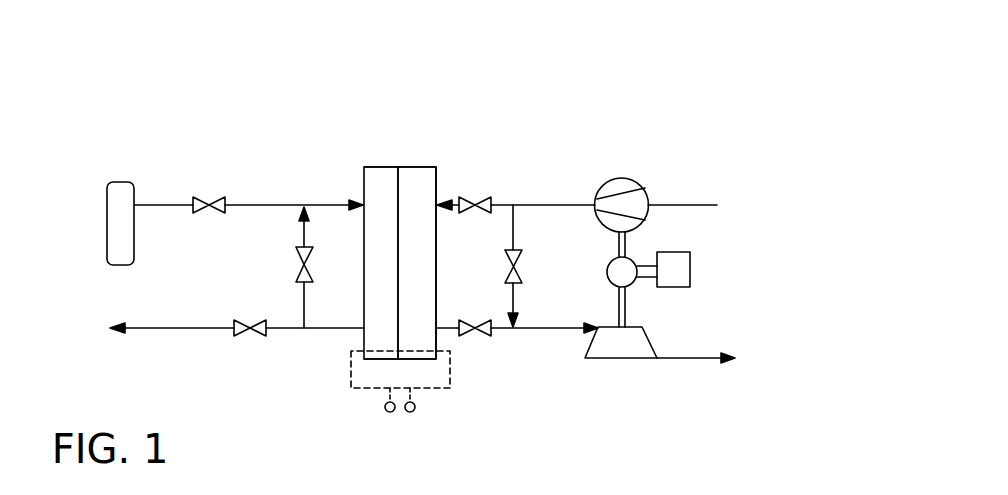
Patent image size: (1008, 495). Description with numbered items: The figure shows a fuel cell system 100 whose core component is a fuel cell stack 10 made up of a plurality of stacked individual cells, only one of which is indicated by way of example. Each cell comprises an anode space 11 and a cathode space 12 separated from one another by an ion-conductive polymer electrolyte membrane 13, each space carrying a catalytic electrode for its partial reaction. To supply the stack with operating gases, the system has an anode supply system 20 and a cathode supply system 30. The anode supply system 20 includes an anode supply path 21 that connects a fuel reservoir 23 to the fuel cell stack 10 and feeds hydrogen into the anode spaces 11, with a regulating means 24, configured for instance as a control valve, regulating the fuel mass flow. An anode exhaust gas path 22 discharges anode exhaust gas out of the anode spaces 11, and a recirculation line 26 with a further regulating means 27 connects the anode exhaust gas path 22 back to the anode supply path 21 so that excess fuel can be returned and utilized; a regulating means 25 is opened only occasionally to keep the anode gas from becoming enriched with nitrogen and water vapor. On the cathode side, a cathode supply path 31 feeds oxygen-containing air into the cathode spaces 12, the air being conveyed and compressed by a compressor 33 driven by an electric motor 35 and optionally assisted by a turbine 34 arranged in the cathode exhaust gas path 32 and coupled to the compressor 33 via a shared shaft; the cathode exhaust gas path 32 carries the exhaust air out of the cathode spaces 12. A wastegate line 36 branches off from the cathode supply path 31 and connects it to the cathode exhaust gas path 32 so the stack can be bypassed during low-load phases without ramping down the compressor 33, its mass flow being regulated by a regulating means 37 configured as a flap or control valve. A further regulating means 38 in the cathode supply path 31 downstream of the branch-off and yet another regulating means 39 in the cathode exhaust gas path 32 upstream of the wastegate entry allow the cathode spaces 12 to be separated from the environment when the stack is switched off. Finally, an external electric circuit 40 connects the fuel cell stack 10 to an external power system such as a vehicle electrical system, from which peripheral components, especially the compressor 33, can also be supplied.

The fuel cell system 100 is at (420, 102).
The fuel cell stack 10 is at (397, 143).
The anode space 11 is at (377, 193).
The cathode space 12 is at (417, 193).
The polymer electrolyte membrane 13 is at (398, 268).
The anode supply system 20 is at (203, 158).
The anode supply path 21 is at (176, 205).
The anode exhaust gas path 22 is at (208, 328).
The fuel reservoir 23 is at (123, 193).
The regulating means 24 is at (200, 208).
The regulating means 25 is at (258, 332).
The recirculation line 26 is at (305, 307).
The regulating means 27 is at (302, 257).
The cathode supply system 30 is at (610, 125).
The cathode supply path 31 is at (545, 205).
The cathode exhaust gas path 32 is at (557, 328).
The compressor 33 is at (618, 187).
The turbine 34 is at (622, 348).
The electric motor 35 is at (619, 275).
The wastegate line 36 is at (513, 227).
The regulating means 37 is at (518, 273).
The regulating means 38 is at (484, 199).
The regulating means 39 is at (483, 333).
The external electric circuit 40 is at (367, 387).